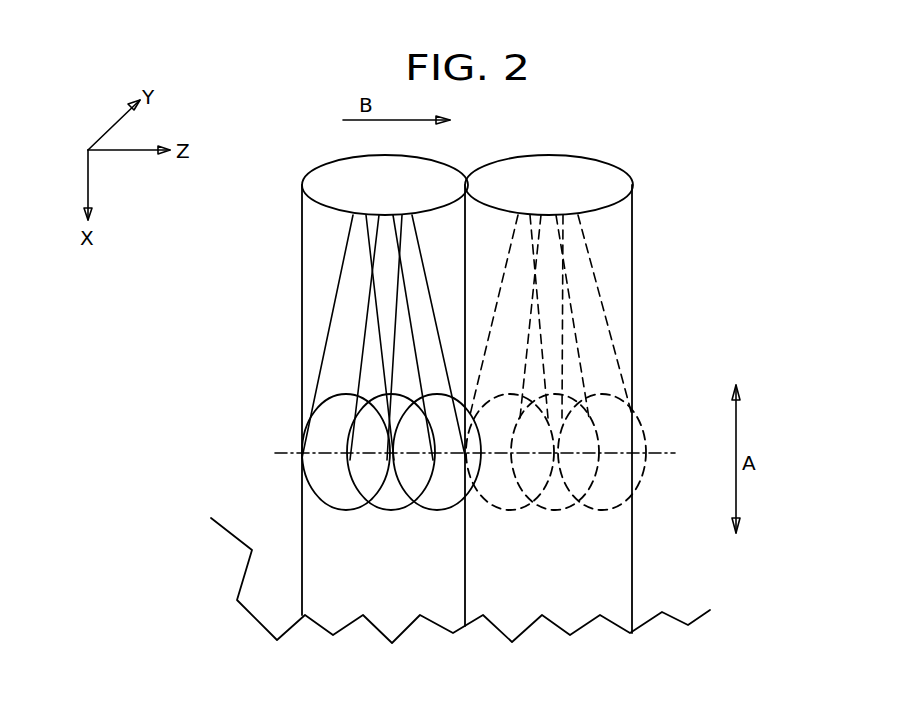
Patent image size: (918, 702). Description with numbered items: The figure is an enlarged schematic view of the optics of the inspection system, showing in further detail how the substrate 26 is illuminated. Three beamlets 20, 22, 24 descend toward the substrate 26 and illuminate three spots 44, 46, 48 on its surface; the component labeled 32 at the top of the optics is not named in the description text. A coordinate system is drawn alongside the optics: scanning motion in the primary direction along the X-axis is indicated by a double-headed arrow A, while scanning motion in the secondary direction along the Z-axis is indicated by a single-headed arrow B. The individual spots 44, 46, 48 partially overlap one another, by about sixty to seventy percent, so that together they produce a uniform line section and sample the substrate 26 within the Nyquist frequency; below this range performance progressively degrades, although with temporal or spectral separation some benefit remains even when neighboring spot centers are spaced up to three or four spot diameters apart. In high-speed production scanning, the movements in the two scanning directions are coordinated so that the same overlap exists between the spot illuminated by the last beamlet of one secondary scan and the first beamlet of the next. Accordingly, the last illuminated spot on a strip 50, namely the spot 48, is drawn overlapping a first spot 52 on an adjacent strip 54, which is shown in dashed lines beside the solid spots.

The beamlet 20 is at (352, 242).
The beamlet 22 is at (383, 230).
The beamlet 24 is at (410, 249).
The substrate 26 is at (262, 630).
The light source housing 32 is at (304, 182).
The spot 44 is at (338, 511).
The spot 46 is at (391, 511).
The spot 48 is at (444, 511).
The strip 50 is at (397, 607).
The first spot 52 is at (508, 511).
The adjacent strip 54 is at (527, 605).